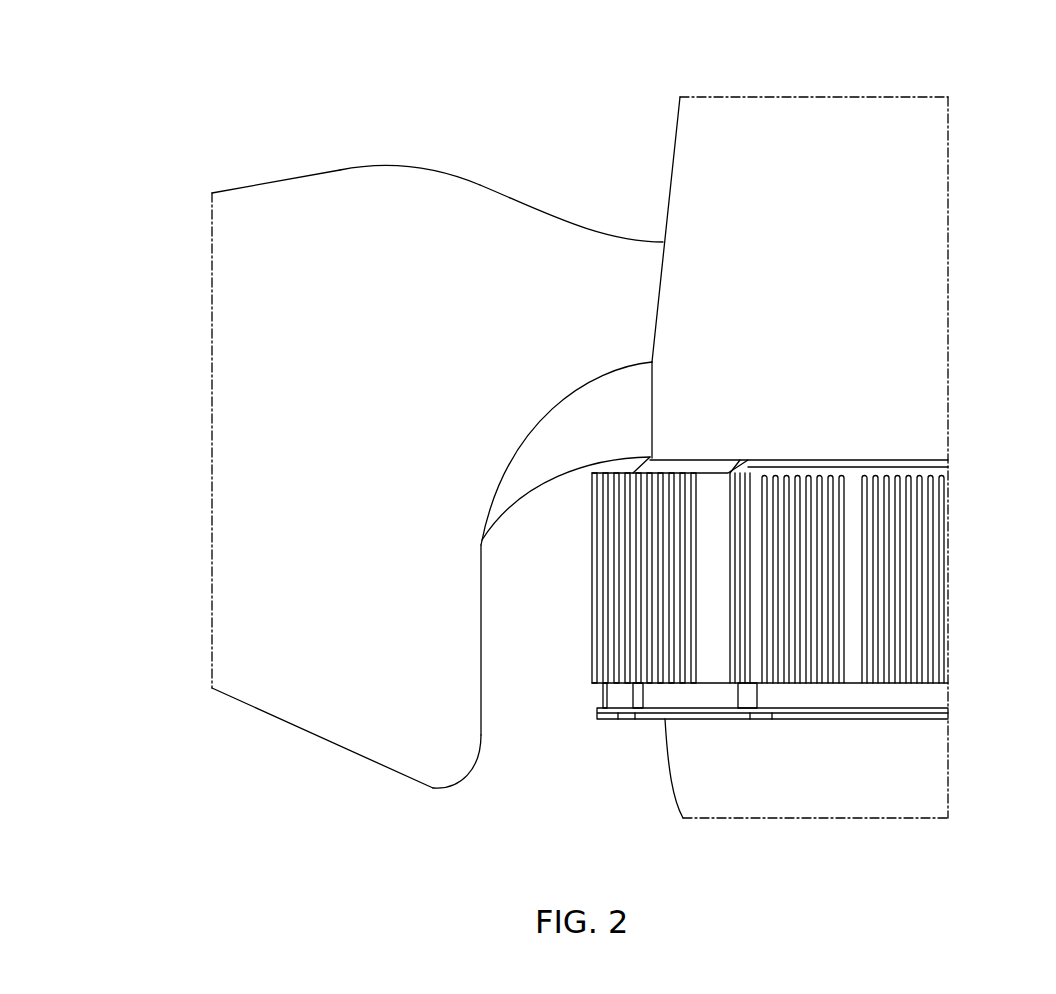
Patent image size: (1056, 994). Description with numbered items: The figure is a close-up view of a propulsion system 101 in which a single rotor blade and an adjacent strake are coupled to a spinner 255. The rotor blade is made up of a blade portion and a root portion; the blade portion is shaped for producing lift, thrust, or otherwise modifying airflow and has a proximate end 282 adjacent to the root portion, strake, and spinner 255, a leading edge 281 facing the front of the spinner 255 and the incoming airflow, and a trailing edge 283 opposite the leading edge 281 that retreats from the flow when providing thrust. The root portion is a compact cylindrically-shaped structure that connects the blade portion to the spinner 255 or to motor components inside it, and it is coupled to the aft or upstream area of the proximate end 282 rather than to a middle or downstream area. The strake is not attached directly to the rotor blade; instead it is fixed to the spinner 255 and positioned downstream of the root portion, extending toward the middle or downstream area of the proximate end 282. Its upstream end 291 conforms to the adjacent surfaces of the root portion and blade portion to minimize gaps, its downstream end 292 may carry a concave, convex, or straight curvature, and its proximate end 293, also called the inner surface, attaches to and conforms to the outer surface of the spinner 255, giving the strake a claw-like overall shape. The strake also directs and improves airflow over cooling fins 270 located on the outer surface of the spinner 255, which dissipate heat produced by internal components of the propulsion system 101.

The propulsion system 101 is at (813, 797).
The spinner 255 is at (799, 416).
The cooling fins 270 is at (928, 588).
The leading edge 281 is at (337, 168).
The proximate end 282 is at (480, 700).
The trailing edge 283 is at (272, 718).
The upstream end 291 is at (577, 380).
The downstream end 292 is at (550, 477).
The proximate end 293 is at (652, 412).